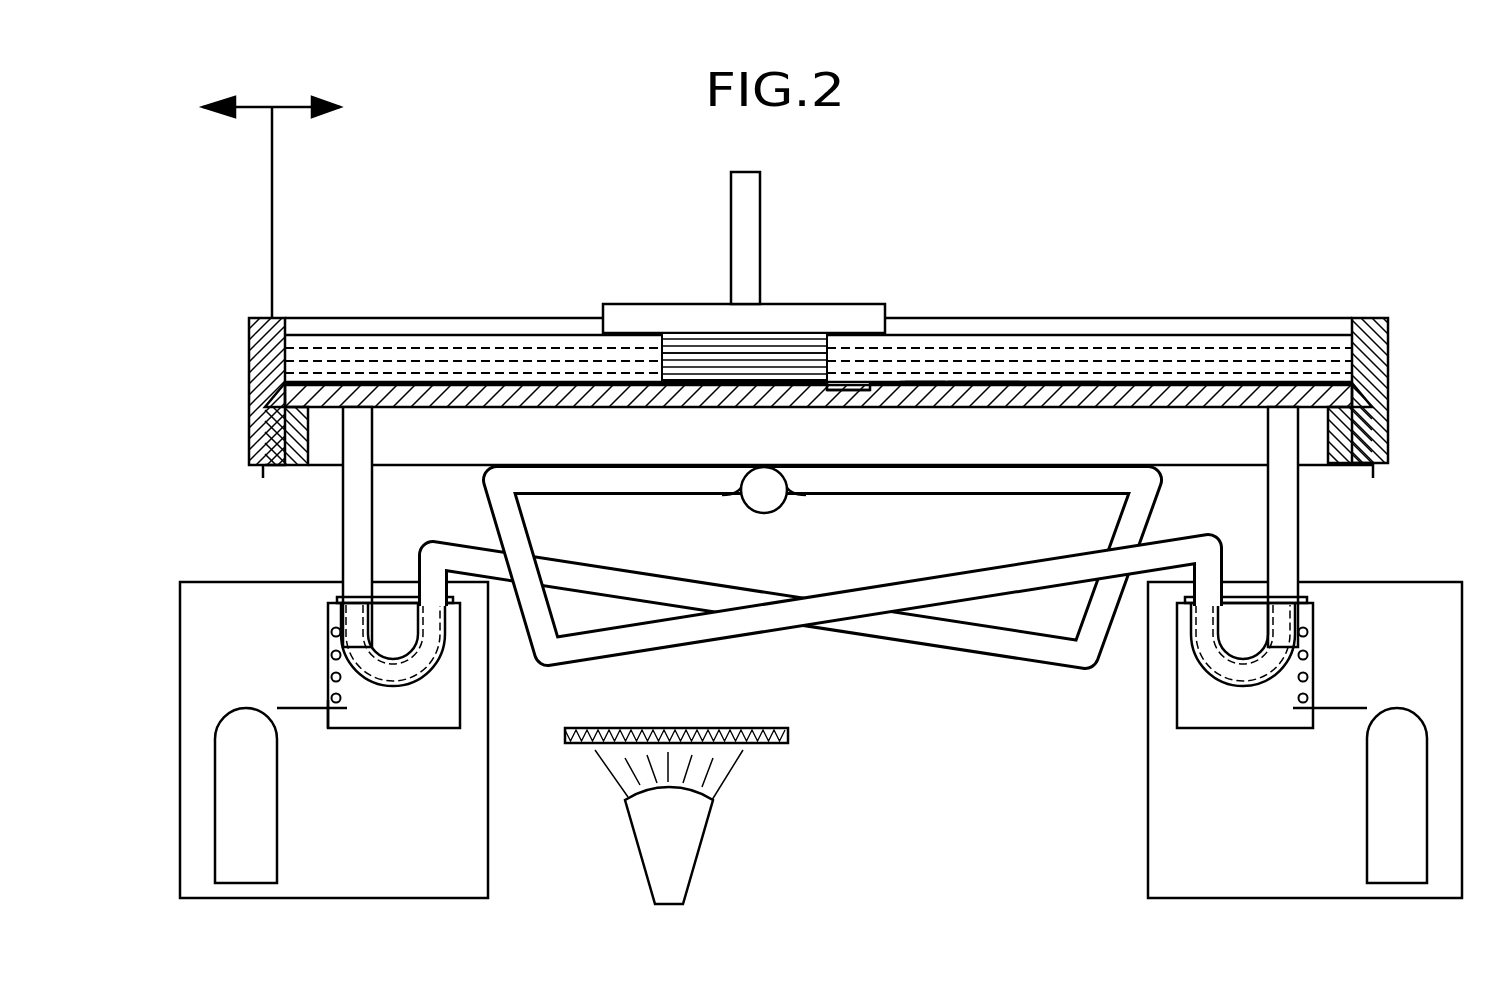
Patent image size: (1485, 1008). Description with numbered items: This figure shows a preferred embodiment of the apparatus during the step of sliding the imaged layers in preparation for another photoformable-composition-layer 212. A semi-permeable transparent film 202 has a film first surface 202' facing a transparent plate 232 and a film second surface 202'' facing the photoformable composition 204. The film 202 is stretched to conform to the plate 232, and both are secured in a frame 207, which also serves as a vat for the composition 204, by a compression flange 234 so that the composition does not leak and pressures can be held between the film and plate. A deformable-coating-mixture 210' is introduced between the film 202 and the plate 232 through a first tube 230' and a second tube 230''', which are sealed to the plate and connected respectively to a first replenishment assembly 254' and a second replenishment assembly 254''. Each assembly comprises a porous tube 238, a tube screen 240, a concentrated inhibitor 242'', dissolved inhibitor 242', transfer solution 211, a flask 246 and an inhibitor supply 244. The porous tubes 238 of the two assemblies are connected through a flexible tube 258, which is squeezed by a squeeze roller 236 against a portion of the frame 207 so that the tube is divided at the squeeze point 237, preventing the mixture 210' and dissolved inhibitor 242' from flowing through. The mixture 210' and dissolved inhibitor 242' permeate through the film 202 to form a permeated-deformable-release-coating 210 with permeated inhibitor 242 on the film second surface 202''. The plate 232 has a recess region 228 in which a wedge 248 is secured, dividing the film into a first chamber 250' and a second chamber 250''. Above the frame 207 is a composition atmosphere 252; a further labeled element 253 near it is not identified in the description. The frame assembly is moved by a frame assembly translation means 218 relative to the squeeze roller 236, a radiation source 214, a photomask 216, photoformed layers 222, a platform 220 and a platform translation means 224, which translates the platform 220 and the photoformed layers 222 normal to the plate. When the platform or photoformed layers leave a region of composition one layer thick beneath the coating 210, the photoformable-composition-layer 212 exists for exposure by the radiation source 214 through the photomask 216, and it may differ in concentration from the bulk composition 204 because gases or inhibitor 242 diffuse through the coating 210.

The semi-permeable transparent film 202 is at (818, 308).
The film first surface 202' is at (967, 320).
The film second surface 202'' is at (1101, 274).
The photoformable composition 204 is at (1267, 352).
The frame 207 is at (1353, 320).
The permeated-deformable-release-coating 210 is at (965, 467).
The deformable-coating-mixture 210' is at (1047, 470).
The transfer solution 211 is at (335, 690).
The photoformable-composition-layer 212 is at (692, 377).
The radiation source 214 is at (705, 837).
The photomask 216 is at (770, 743).
The frame assembly translation means 218 is at (292, 105).
The platform 220 is at (790, 303).
The photoformed layers 222 is at (715, 348).
The platform translation means 224 is at (731, 197).
The recess region 228 is at (882, 390).
The first tube 230' is at (307, 527).
The second tube 230''' is at (1350, 527).
The transparent plate 232 is at (432, 397).
The compression flange 234 is at (265, 468).
The squeeze roller 236 is at (775, 513).
The squeeze point 237 is at (747, 472).
The porous tube 238 is at (334, 648).
The tube screen 240 is at (334, 670).
The permeated inhibitor 242 is at (910, 459).
The dissolved inhibitor 242' is at (346, 640).
The concentrated inhibitor 242'' is at (376, 737).
The inhibitor supply 244 is at (215, 777).
The flask 246 is at (448, 732).
The wedge 248 is at (857, 390).
The first chamber 250' is at (328, 360).
The second chamber 250'' is at (1377, 336).
The composition atmosphere 252 is at (1157, 327).
The intermediate layer 253 is at (1230, 333).
The first replenishment assembly 254' is at (385, 740).
The second replenishment assembly 254'' is at (1249, 740).
The flexible tube 258 is at (1066, 667).